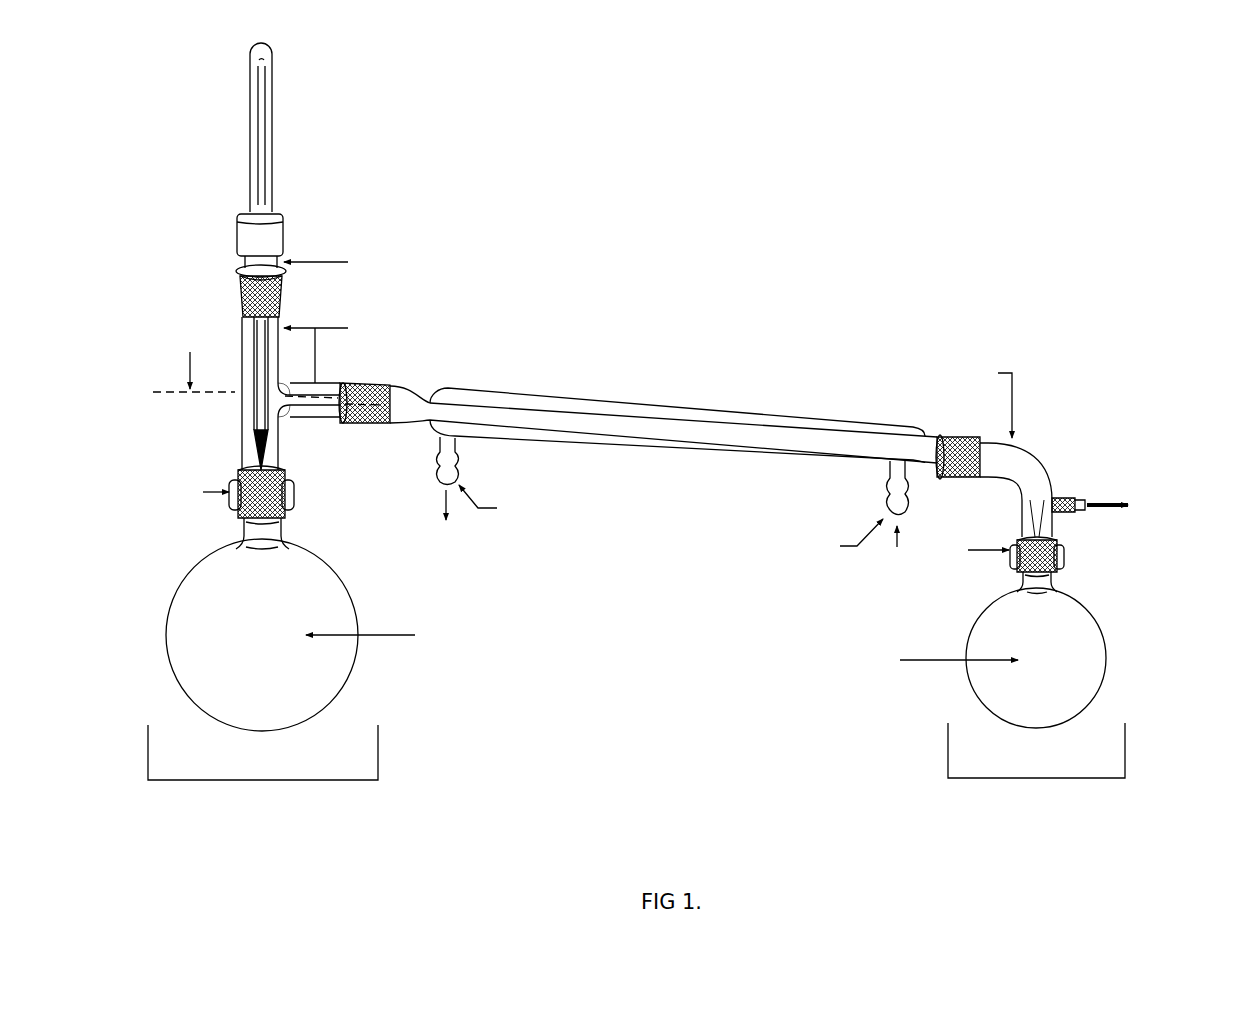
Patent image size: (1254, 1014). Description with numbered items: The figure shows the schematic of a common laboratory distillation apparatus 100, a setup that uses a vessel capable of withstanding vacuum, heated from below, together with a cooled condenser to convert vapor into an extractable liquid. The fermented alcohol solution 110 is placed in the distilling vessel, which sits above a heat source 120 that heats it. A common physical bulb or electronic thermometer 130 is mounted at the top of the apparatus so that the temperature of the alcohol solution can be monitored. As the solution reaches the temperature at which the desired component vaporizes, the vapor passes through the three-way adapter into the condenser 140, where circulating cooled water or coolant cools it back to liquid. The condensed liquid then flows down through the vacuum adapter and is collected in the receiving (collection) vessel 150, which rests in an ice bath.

The distillation apparatus 100 is at (723, 157).
The fermented alcohol solution 110 is at (248, 675).
The heat source 120 is at (348, 772).
The thermometer 130 is at (273, 138).
The condenser 140 is at (503, 419).
The receiving (collection) vessel 150 is at (1065, 687).